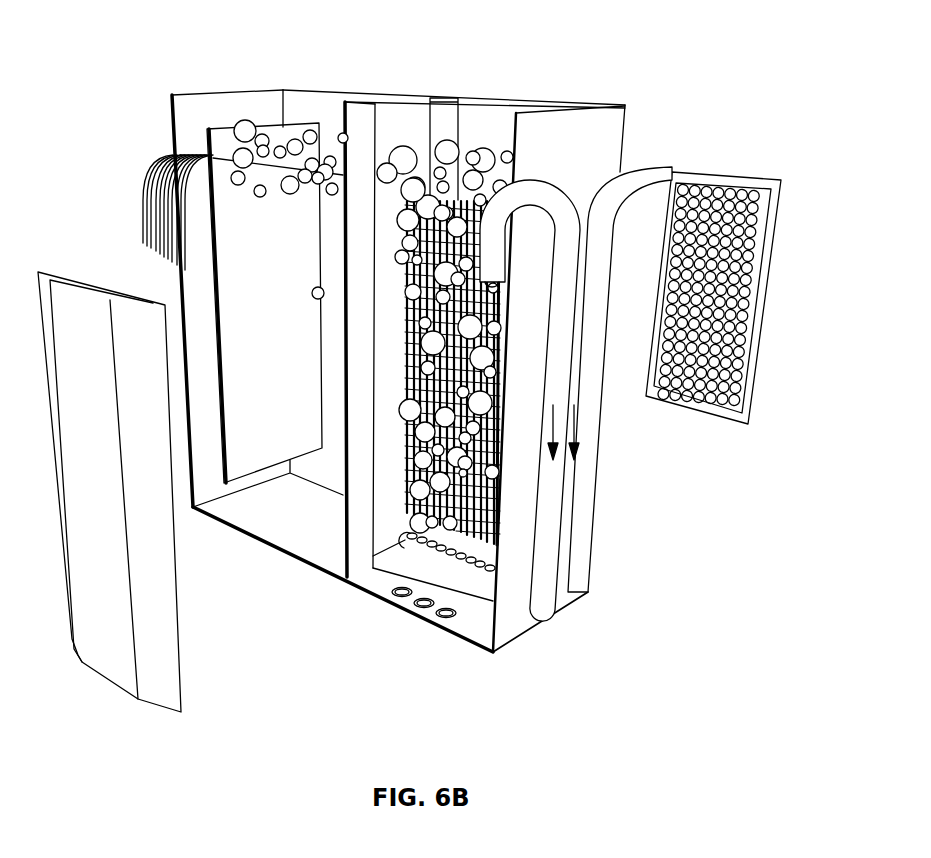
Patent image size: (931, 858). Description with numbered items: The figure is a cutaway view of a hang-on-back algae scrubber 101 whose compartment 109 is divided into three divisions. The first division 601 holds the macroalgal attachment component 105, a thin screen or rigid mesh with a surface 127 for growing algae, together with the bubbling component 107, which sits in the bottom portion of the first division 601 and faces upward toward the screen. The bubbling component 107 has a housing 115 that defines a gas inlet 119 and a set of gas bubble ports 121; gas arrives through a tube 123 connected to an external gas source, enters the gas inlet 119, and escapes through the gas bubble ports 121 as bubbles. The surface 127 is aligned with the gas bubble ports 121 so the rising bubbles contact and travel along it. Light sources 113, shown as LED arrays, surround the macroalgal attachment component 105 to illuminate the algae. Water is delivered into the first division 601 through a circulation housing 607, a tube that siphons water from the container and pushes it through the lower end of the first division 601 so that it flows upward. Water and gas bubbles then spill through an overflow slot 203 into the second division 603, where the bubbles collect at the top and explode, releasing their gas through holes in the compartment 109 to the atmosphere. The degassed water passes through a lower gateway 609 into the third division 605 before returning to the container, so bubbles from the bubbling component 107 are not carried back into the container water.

The algae scrubber 101 is at (106, 76).
The compartment 109 is at (625, 140).
The light source 113 is at (53, 273).
The third division 605 is at (197, 297).
The second division 603 is at (329, 347).
The lower gateway 609 is at (240, 495).
The first division 601 is at (390, 440).
The macroalgal attachment component 105 is at (407, 307).
The overflow slot 203 is at (397, 213).
The circulation housing 607 is at (555, 477).
The tube 123 is at (578, 387).
The surface 127 is at (500, 503).
The gas bubble ports 121 is at (447, 548).
The bubbling component 107 is at (412, 547).
The housing 115 is at (477, 573).
The gas inlet 119 is at (520, 612).